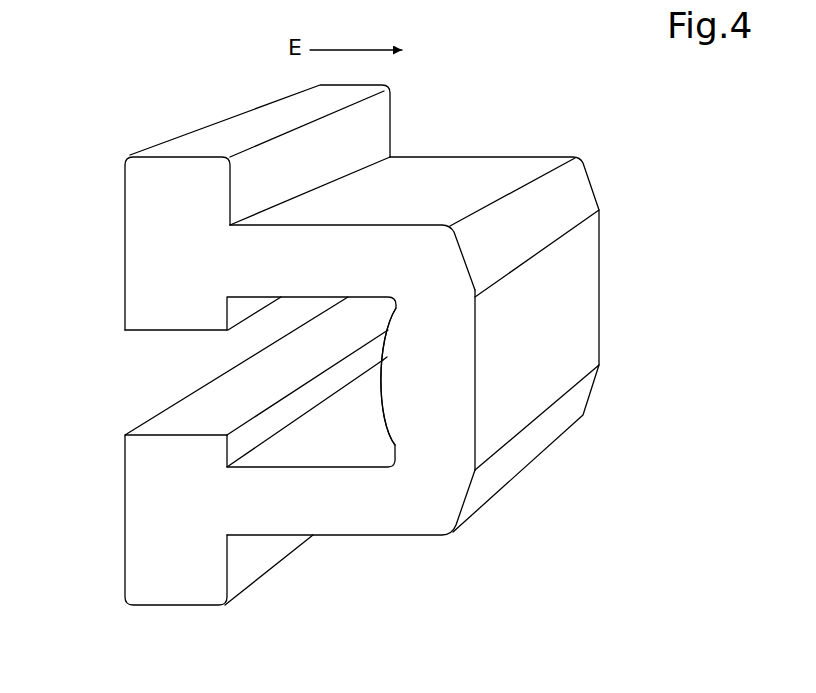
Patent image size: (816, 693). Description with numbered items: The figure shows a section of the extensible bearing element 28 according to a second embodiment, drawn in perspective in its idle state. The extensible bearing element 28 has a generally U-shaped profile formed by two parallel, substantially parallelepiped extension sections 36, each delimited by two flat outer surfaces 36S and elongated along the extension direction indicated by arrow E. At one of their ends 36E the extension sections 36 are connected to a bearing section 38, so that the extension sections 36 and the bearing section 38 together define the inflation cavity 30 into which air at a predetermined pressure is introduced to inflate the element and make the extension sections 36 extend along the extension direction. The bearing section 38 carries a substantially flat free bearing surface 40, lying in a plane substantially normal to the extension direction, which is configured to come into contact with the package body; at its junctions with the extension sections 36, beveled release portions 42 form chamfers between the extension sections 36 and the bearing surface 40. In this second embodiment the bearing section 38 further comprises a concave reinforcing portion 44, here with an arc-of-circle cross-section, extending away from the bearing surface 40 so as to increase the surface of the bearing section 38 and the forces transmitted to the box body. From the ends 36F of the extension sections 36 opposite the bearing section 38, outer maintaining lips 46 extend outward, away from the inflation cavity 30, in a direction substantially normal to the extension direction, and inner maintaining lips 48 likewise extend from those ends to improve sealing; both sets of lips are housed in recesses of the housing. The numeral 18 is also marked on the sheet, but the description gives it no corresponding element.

The clip assembly 18 is at (556, 518).
The extensible bearing element 28 is at (635, 443).
The inflation cavity 30 is at (330, 420).
The extension section 36 is at (507, 167).
The end of extension section 36E is at (358, 325).
The end of extension section 36F is at (310, 172).
The flat outer surface 36S is at (305, 296).
The bearing section 38 is at (617, 322).
The bearing surface 40 is at (553, 285).
The beveled release portion 42 is at (560, 202).
The concave reinforcing portion 44 is at (403, 393).
The outer maintaining lip 46 is at (240, 130).
The inner maintaining lip 48 is at (238, 308).